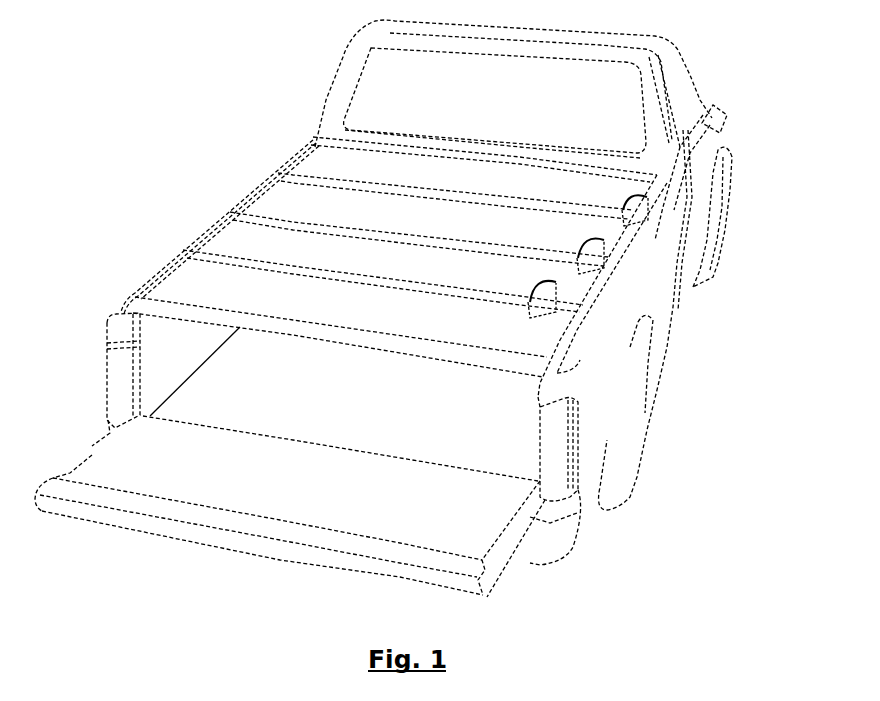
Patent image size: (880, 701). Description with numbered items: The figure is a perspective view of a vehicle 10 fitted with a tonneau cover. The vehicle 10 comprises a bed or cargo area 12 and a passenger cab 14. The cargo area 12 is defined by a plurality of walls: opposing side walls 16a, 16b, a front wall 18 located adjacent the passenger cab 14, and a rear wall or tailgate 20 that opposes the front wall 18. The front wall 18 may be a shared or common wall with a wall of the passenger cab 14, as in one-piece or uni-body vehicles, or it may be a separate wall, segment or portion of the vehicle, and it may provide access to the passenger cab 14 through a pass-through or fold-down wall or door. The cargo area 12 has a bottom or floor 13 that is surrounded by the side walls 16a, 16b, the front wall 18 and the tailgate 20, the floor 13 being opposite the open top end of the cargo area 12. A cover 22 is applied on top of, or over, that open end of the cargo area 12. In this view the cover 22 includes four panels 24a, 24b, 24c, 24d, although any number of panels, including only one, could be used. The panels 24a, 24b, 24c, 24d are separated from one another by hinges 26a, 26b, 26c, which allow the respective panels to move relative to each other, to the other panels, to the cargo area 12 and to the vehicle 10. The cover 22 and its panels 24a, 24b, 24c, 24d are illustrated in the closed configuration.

The vehicle 10 is at (443, 292).
The bed or cargo area 12 is at (403, 361).
The bottom or floor 13 is at (392, 411).
The passenger cab 14 is at (686, 50).
The side wall 16a is at (107, 358).
The side wall 16b is at (583, 467).
The front wall 18 is at (373, 163).
The rear wall or tailgate 20 is at (93, 465).
The cover 22 is at (448, 300).
The panel 24a is at (380, 318).
The panel 24b is at (444, 274).
The panel 24c is at (508, 236).
The panel 24d is at (574, 198).
The hinge 26a is at (556, 282).
The hinge 26b is at (604, 240).
The hinge 26c is at (647, 197).